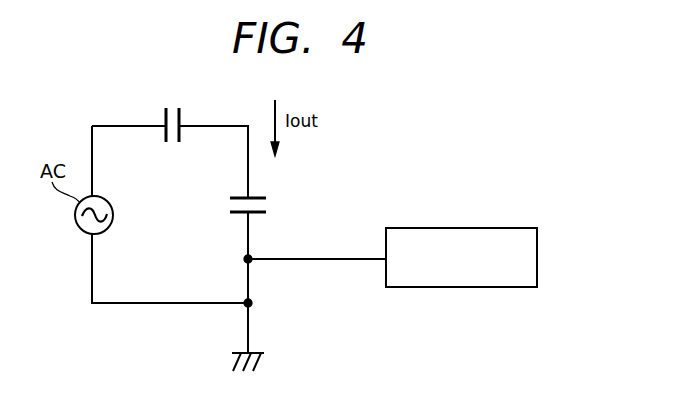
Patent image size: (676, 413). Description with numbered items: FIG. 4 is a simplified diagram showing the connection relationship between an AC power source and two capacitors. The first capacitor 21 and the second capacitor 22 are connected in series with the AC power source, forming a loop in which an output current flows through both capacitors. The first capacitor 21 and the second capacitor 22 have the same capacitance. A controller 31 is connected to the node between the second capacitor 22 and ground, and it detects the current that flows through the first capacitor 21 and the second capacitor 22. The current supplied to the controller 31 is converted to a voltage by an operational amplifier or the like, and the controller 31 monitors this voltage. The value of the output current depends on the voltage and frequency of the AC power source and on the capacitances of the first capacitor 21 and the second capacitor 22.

The first capacitor 21 is at (181, 114).
The second capacitor 22 is at (266, 198).
The controller 31 is at (488, 228).